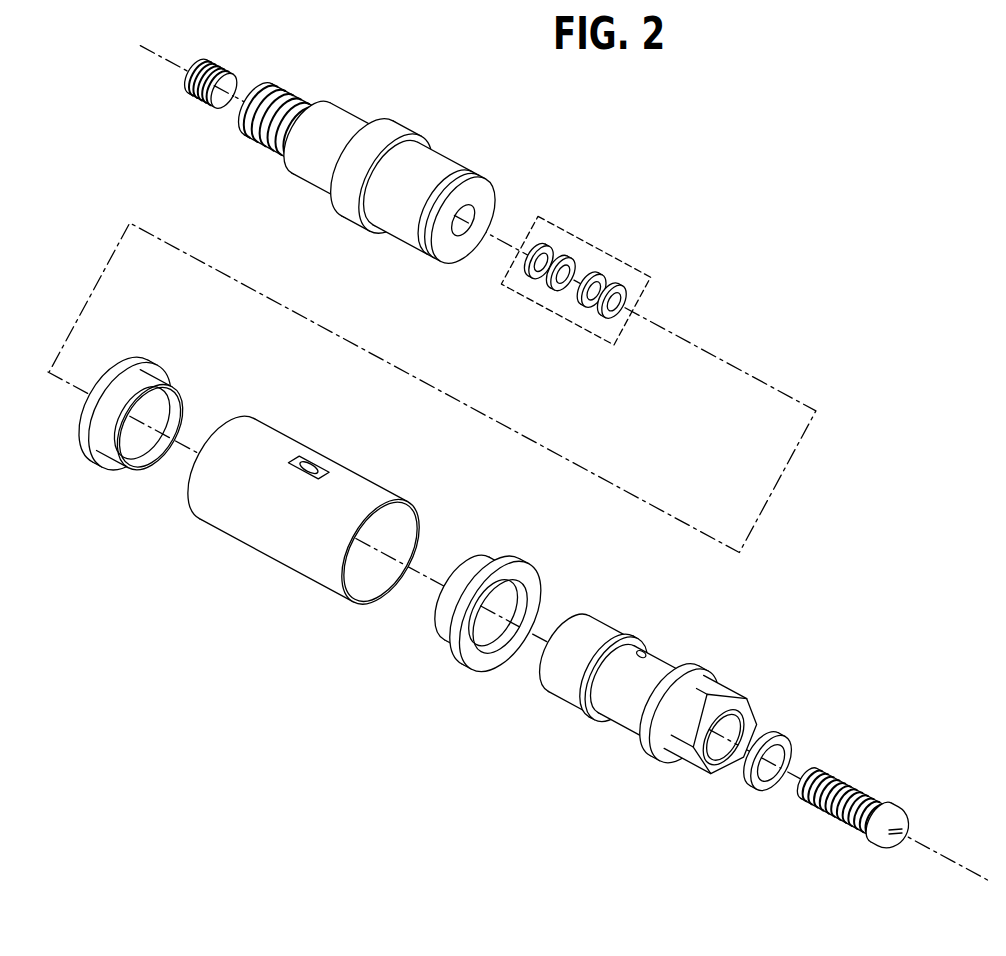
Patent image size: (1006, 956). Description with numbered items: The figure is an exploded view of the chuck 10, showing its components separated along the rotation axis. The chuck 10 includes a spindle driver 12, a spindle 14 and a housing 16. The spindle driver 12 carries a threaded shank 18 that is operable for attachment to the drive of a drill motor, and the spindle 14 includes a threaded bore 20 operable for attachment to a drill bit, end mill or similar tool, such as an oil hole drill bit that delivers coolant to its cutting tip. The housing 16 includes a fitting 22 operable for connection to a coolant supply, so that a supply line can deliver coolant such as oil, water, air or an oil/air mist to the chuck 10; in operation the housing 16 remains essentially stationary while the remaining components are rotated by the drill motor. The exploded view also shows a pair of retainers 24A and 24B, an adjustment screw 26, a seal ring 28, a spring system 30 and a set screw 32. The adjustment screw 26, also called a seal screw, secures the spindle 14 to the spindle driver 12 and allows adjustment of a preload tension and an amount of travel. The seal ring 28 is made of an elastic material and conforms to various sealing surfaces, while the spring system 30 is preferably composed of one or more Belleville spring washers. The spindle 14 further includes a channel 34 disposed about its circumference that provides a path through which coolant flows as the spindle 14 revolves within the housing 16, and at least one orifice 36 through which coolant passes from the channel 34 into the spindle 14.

The chuck 10 is at (511, 70).
The spindle driver 12 is at (398, 122).
The spindle 14 is at (642, 723).
The housing 16 is at (263, 533).
The threaded shank 18 is at (288, 93).
The threaded bore 20 is at (756, 712).
The fitting 22 is at (330, 470).
The retainer 24A is at (500, 566).
The retainer 24B is at (149, 360).
The adjustment screw 26 is at (861, 792).
The seal ring 28 is at (795, 744).
The spring system 30 is at (588, 238).
The set screw 32 is at (222, 67).
The channel 34 is at (612, 712).
The orifice 36 is at (646, 650).